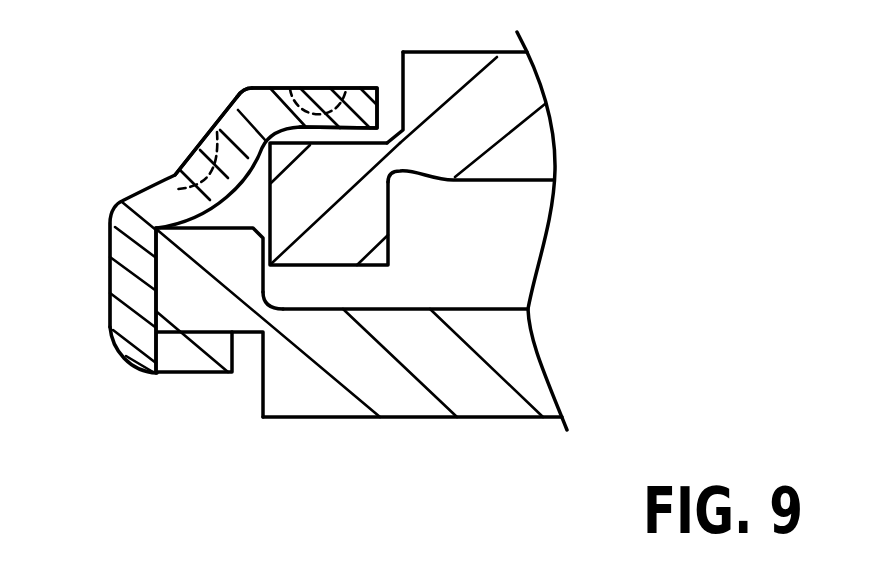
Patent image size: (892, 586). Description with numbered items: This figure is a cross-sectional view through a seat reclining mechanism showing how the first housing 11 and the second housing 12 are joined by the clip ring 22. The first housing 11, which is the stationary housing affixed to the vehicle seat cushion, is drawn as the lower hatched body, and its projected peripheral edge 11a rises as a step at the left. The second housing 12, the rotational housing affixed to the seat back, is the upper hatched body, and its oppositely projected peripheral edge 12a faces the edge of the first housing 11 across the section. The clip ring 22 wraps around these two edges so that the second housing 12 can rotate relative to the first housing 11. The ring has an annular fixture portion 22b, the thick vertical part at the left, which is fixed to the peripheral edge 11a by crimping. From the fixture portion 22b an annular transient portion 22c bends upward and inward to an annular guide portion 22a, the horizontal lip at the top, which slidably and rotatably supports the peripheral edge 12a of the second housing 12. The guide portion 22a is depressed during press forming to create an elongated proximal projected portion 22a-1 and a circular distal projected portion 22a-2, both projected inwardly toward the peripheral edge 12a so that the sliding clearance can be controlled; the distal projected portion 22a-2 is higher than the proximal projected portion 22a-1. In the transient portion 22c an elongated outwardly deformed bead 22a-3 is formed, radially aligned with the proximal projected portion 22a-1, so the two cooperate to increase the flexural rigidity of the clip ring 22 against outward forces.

The first housing 11 is at (409, 423).
The peripheral edge of first housing 11a is at (200, 312).
The second housing 12 is at (471, 47).
The peripheral edge of second housing 12a is at (378, 216).
The clip ring 22 is at (109, 195).
The guide portion 22a is at (280, 86).
The proximal projected portion 22a-1 is at (242, 104).
The distal projected portion 22a-2 is at (316, 86).
The bead 22a-3 is at (200, 167).
The fixture portion 22b is at (110, 271).
The transient portion 22c is at (197, 107).